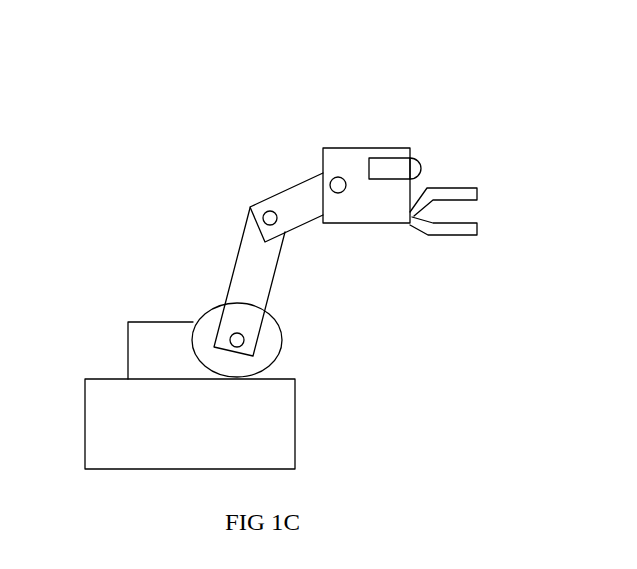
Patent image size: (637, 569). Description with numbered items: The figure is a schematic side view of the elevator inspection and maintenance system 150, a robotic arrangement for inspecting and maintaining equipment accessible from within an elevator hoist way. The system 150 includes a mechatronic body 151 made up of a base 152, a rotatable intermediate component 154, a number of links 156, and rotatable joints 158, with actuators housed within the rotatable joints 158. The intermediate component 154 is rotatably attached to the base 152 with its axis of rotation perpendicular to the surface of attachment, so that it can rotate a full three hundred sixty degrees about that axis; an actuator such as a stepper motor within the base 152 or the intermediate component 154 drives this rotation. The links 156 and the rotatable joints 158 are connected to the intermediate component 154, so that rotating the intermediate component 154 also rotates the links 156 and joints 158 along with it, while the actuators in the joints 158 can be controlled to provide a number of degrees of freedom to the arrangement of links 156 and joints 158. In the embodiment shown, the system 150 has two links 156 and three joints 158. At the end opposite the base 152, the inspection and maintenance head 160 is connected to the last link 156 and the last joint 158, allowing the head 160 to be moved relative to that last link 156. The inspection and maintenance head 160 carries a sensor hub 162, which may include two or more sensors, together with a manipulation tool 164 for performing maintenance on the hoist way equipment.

The elevator inspection and maintenance system 150 is at (167, 58).
The mechatronic body 151 is at (113, 233).
The base 152 is at (297, 435).
The rotatable intermediate component 154 is at (123, 335).
The links 156 is at (293, 198).
The rotatable joints 158 is at (344, 193).
The inspection and maintenance head 160 is at (370, 132).
The sensor hub 162 is at (387, 172).
The manipulation tool 164 is at (440, 238).